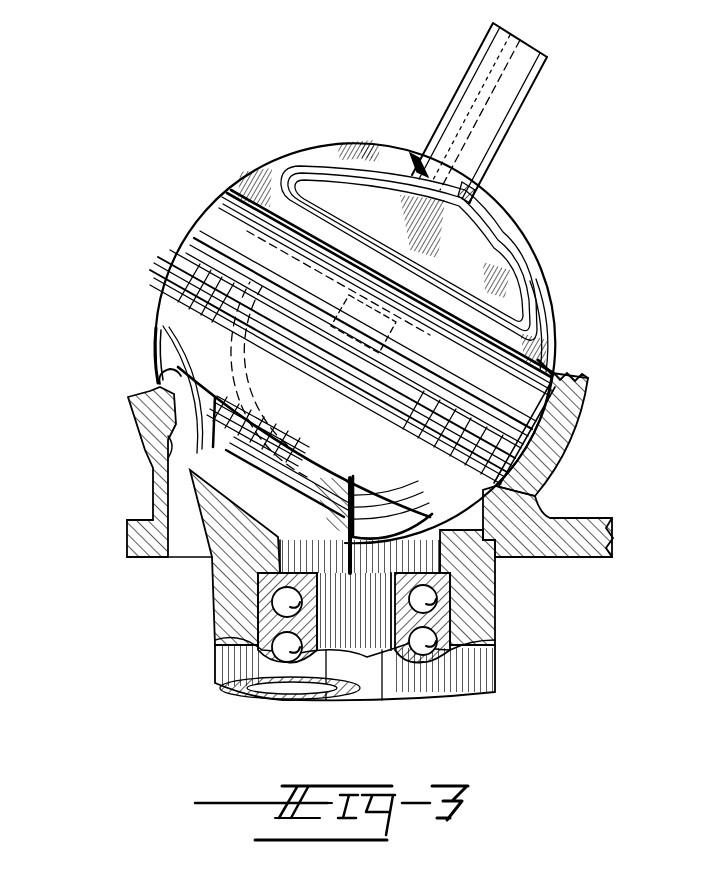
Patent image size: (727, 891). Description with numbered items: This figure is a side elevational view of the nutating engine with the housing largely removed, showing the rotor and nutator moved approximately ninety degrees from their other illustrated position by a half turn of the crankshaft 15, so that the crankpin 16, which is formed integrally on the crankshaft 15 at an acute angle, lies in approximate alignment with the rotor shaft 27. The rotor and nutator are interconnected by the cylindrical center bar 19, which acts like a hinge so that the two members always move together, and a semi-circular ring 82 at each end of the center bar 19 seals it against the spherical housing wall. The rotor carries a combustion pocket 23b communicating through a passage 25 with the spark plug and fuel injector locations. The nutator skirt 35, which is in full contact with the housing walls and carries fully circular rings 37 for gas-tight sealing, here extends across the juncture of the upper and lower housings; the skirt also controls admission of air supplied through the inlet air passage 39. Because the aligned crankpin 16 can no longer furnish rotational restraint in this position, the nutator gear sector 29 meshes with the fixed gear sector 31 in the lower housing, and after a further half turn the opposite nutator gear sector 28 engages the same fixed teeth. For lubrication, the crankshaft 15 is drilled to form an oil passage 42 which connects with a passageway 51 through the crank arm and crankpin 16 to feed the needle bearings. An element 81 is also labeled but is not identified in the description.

The crankshaft 15 is at (342, 645).
The crankpin 16 is at (302, 386).
The center bar 19 is at (554, 372).
The combustion pocket 23b is at (522, 296).
The passage 25 is at (430, 150).
The rotor shaft 27 is at (538, 98).
The nutator gear sector 28 is at (562, 560).
The nutator gear sector 29 is at (150, 364).
The fixed gear sector 31 is at (500, 560).
The nutator skirt 35 is at (532, 488).
The rings 37 is at (185, 280).
The inlet air passage 39 is at (152, 470).
The passage 42 is at (367, 650).
The passageway 51 is at (335, 425).
The seal band 81 is at (230, 194).
The semi-circular ring 82 is at (535, 428).